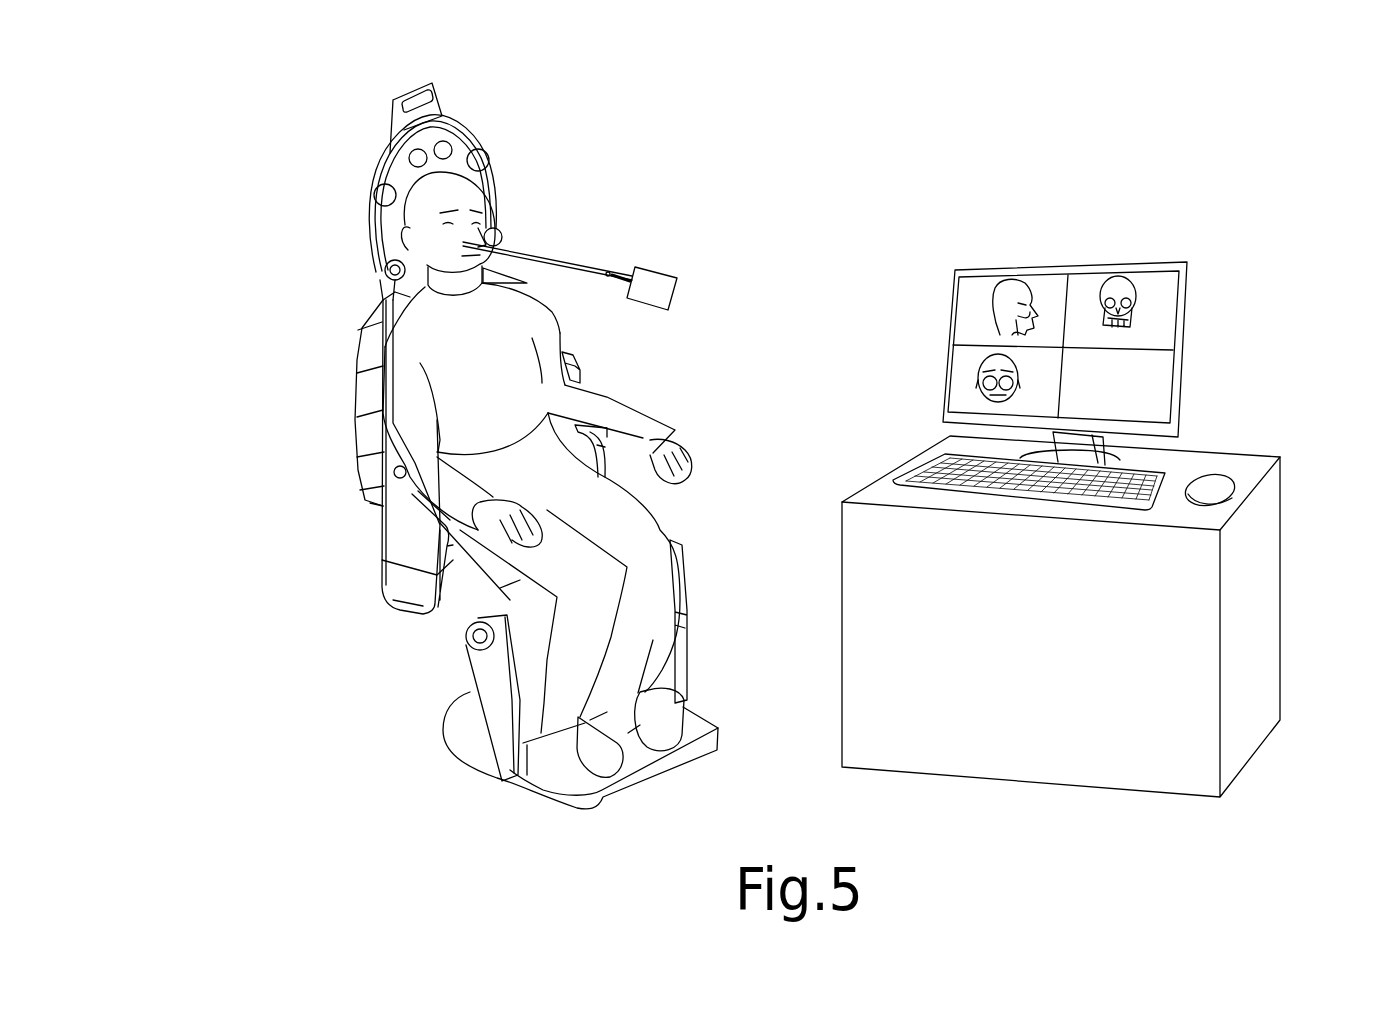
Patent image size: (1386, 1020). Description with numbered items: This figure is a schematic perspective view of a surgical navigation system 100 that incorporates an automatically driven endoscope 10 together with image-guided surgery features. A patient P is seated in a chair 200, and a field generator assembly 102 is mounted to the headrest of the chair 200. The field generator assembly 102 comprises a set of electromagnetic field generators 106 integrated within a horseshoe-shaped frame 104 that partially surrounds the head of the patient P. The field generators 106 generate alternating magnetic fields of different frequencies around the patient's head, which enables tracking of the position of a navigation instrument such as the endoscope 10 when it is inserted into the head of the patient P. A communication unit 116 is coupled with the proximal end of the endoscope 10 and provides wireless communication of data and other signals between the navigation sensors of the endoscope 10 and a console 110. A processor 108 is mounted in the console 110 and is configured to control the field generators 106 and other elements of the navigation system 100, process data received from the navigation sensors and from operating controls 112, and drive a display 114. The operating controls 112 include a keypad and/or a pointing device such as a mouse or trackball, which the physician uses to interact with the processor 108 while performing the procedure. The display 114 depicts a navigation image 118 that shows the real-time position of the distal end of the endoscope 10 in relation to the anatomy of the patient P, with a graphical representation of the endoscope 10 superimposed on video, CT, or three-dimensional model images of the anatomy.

The endoscope 10 is at (558, 262).
The surgical navigation system 100 is at (1087, 138).
The field generator assembly 102 is at (376, 146).
The horseshoe-shaped frame 104 is at (458, 138).
The electromagnetic field generators 106 is at (483, 152).
The processor 108 is at (910, 437).
The console 110 is at (1255, 462).
The operating controls 112 is at (905, 474).
The display 114 is at (1157, 262).
The communication unit 116 is at (657, 266).
The navigation image 118 is at (1165, 322).
The chair 200 is at (340, 708).
The patient P is at (585, 190).